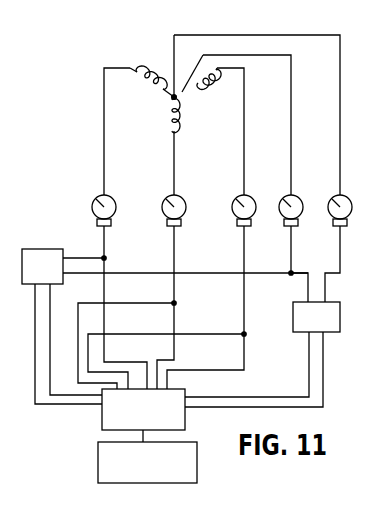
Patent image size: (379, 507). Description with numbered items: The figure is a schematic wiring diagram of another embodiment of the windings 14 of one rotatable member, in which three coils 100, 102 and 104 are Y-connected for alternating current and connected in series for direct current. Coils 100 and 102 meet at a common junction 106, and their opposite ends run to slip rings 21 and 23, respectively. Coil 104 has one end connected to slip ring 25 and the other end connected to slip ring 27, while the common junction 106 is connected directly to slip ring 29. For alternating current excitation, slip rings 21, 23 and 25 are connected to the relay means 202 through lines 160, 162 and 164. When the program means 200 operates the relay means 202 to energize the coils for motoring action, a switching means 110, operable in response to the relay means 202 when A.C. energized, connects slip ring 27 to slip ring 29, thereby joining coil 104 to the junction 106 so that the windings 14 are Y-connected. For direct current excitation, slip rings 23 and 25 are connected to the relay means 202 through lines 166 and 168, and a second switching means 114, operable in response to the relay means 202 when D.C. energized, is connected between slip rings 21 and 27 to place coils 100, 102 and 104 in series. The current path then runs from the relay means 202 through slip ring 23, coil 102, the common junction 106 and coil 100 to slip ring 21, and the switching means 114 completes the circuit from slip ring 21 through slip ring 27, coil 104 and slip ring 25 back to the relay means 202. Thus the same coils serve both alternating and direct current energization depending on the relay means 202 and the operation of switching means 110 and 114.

The windings 14 is at (173, 130).
The coil 100 is at (135, 84).
The coil 102 is at (180, 127).
The coil 104 is at (200, 92).
The common junction 106 is at (174, 97).
The slip ring 21 is at (110, 198).
The slip ring 23 is at (183, 210).
The slip ring 25 is at (253, 210).
The slip ring 27 is at (300, 210).
The slip ring 29 is at (349, 210).
The switching means 110 is at (262, 354).
The second switching means 114 is at (165, 326).
The line 160 is at (106, 361).
The line 162 is at (177, 348).
The line 164 is at (247, 363).
The line 166 is at (153, 300).
The line 168 is at (182, 334).
The program means 200 is at (97, 456).
The relay means 202 is at (100, 413).